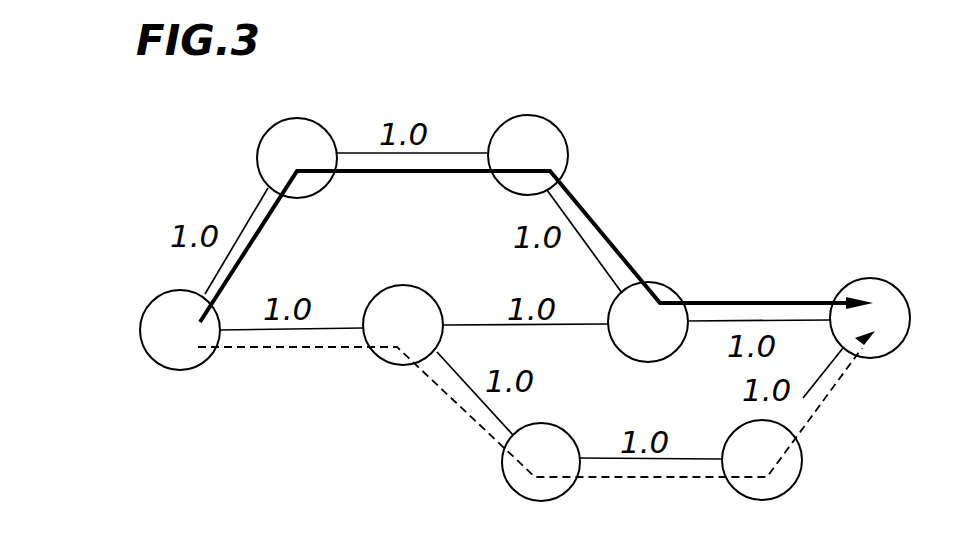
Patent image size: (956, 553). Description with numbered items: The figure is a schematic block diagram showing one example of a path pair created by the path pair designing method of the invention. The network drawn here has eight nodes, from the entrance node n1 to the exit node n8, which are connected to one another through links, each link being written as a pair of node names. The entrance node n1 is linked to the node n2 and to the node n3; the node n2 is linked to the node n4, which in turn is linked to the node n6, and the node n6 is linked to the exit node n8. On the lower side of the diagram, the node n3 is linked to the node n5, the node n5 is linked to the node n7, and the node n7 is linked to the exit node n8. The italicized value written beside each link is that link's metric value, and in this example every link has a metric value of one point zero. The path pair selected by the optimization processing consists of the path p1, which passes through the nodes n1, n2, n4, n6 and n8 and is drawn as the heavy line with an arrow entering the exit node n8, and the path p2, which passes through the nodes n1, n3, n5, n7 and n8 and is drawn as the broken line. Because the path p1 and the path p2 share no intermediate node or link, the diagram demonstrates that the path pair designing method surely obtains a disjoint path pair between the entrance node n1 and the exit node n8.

The entrance node n1 is at (160, 344).
The node n2 is at (269, 158).
The node n3 is at (390, 342).
The node n4 is at (507, 169).
The node n5 is at (519, 476).
The node n6 is at (629, 336).
The node n7 is at (740, 472).
The exit node n8 is at (882, 331).
The path p1 is at (725, 300).
The path p2 is at (287, 347).